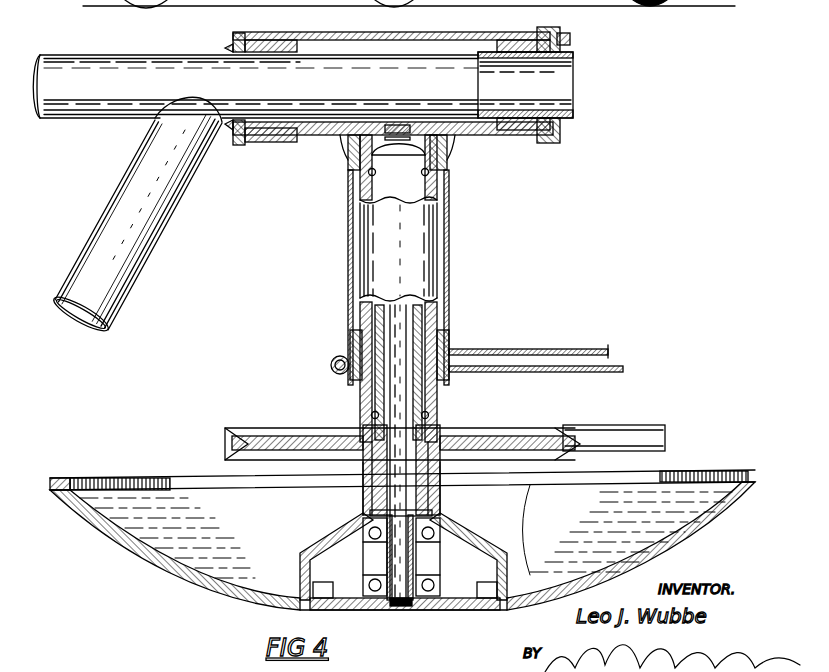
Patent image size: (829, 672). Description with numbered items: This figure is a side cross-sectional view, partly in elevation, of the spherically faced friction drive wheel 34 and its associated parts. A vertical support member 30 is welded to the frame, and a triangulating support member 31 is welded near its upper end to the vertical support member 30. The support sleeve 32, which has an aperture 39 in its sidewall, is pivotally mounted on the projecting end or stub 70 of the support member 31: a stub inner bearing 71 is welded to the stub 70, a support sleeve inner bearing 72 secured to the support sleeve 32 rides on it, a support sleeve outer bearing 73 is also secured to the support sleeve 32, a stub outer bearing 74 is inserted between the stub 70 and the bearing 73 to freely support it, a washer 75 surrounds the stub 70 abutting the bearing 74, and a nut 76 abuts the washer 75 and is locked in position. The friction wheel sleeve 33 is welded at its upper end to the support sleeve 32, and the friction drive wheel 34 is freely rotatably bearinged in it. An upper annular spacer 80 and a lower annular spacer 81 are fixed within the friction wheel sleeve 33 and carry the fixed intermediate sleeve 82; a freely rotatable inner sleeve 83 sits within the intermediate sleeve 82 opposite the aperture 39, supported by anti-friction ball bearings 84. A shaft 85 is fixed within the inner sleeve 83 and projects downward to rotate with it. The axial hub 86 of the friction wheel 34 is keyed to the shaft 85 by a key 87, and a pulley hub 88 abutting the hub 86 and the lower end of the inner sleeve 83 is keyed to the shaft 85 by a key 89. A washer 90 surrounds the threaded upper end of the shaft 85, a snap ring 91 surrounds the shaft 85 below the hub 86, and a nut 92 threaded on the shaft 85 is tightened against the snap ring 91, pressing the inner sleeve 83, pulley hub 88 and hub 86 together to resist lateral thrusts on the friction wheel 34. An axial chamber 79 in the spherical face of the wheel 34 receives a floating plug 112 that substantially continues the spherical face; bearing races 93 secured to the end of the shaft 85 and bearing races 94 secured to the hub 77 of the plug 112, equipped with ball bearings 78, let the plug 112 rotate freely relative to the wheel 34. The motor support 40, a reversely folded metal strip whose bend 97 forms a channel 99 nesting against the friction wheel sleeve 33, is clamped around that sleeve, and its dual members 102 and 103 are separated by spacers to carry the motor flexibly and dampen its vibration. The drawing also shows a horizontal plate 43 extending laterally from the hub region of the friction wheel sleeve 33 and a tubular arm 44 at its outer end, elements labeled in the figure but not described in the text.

The vertical support member 30 is at (112, 232).
The triangulating support member 31 is at (97, 67).
The support sleeve 32 is at (413, 34).
The friction wheel sleeve 33 is at (348, 248).
The spherically faced friction drive wheel 34 is at (680, 524).
The aperture 39 is at (380, 137).
The support 40 is at (549, 350).
The plate 43 is at (283, 432).
The tubular arm 44 is at (630, 428).
The stub 70 is at (563, 86).
The stub inner bearing 71 is at (233, 46).
The support sleeve inner bearing 72 is at (268, 44).
The support sleeve outer bearing 73 is at (532, 38).
The stub outer bearing 74 is at (550, 30).
The washer 75 is at (553, 140).
The nut 76 is at (570, 40).
The hub 77 is at (440, 558).
The ball bearings 78 is at (420, 604).
The axial chamber 79 is at (336, 600).
The upper annular spacer 80 is at (449, 155).
The lower annular spacer 81 is at (450, 340).
The fixed intermediate sleeve 82 is at (438, 238).
The inner sleeve 83 is at (440, 305).
The anti-friction ball bearings 84 is at (430, 172).
The shaft 85 is at (395, 392).
The axial hub 86 is at (388, 478).
The key 87 is at (462, 494).
The pulley hub 88 is at (372, 460).
The key 89 is at (447, 432).
The washer 90 is at (368, 162).
The snap ring 91 is at (385, 512).
The nut 92 is at (348, 160).
The bearing races 93 is at (380, 542).
The bearing races 94 is at (440, 546).
The bend 97 is at (332, 360).
The channel 99 is at (334, 370).
The dual member 102 is at (565, 370).
The dual member 103 is at (596, 349).
The floating plug 112 is at (472, 604).